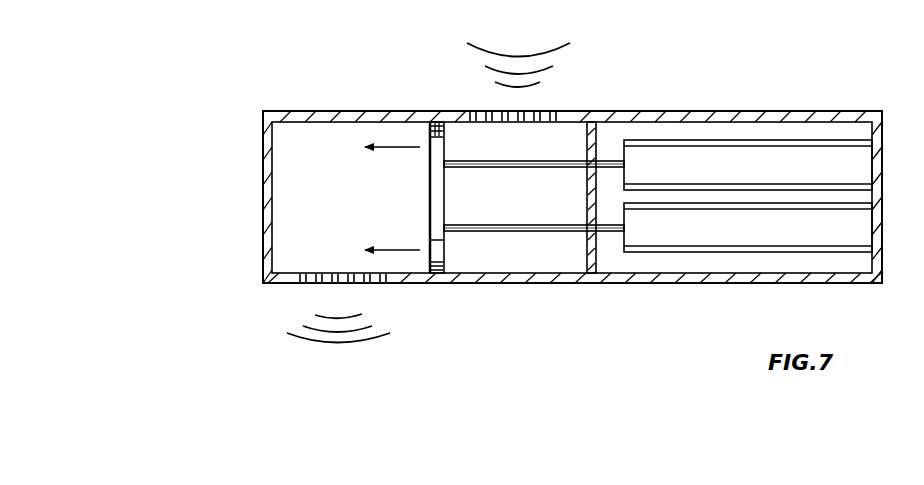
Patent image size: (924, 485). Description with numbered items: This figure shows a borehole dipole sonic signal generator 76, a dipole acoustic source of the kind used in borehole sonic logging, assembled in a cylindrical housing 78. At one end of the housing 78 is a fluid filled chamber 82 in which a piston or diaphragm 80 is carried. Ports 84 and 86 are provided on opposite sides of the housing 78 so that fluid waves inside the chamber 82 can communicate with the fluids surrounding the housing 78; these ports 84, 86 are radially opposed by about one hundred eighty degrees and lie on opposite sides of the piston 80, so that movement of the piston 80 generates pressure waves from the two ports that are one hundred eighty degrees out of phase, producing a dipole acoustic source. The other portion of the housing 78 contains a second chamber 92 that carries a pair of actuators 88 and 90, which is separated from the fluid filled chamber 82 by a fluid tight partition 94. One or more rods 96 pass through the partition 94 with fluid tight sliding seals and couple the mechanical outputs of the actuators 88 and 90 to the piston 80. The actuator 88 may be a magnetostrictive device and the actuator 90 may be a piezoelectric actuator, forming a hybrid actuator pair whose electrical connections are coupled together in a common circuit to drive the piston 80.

The borehole dipole sonic signal generator 76 is at (216, 203).
The cylindrical housing 78 is at (312, 112).
The piston 80 is at (435, 117).
The fluid filled chamber 82 is at (325, 174).
The port 84 is at (298, 280).
The port 86 is at (558, 112).
The actuator 88 is at (765, 177).
The actuator 90 is at (765, 239).
The second chamber 92 is at (633, 263).
The fluid tight partition 94 is at (583, 258).
The rods 96 is at (508, 168).